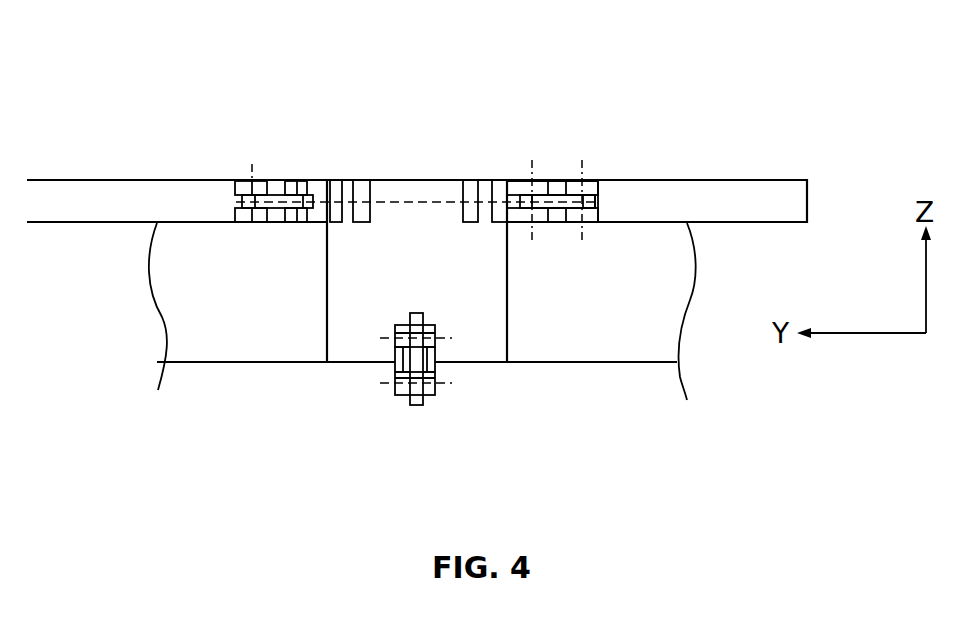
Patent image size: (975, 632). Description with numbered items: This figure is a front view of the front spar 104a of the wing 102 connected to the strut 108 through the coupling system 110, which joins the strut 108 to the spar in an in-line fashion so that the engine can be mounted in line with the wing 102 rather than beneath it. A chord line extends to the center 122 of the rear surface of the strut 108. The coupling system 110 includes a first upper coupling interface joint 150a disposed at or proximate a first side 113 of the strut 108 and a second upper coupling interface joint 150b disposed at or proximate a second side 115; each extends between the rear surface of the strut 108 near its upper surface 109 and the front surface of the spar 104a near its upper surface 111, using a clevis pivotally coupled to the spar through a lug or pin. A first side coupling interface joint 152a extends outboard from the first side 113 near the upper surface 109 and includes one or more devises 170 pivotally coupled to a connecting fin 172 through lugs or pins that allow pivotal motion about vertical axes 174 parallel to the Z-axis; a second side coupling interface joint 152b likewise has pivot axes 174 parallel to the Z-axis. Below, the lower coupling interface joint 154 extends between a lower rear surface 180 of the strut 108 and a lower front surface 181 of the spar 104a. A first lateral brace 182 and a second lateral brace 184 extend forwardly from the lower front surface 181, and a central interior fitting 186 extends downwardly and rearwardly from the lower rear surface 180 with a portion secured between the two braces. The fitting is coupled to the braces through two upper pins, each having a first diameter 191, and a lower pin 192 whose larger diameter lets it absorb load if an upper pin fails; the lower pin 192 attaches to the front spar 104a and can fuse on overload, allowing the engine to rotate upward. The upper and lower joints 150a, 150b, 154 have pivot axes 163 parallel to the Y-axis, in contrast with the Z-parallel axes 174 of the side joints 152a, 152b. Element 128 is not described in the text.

The wing 102 is at (118, 324).
The front spar 104a is at (662, 252).
The strut 108 is at (473, 362).
The upper surface of the strut 109 is at (410, 180).
The coupling system 110 is at (661, 151).
The upper surface of the spar 111 is at (275, 180).
The first side of the strut 113 is at (332, 180).
The second side of the strut 115 is at (505, 180).
The center of the rear surface of the strut 122 is at (597, 197).
The column 128 is at (593, 331).
The first upper coupling interface joint 150a is at (362, 180).
The second upper coupling interface joint 150b is at (487, 180).
The first side coupling interface joint 152a is at (418, 205).
The second side coupling interface joint 152b is at (549, 172).
The lower coupling interface joint 154 is at (407, 378).
The pivot axes 163 is at (385, 202).
The devises 170 is at (250, 224).
The connecting fin 172 is at (267, 224).
The pivot axes 174 is at (253, 177).
The lower rear surface of the strut 180 is at (380, 350).
The lower front surface of the spar 181 is at (437, 352).
The first lateral brace 182 is at (380, 357).
The second lateral brace 184 is at (463, 363).
The central interior fitting 186 is at (415, 316).
The first diameter 191 is at (400, 325).
The lower pin 192 is at (439, 387).